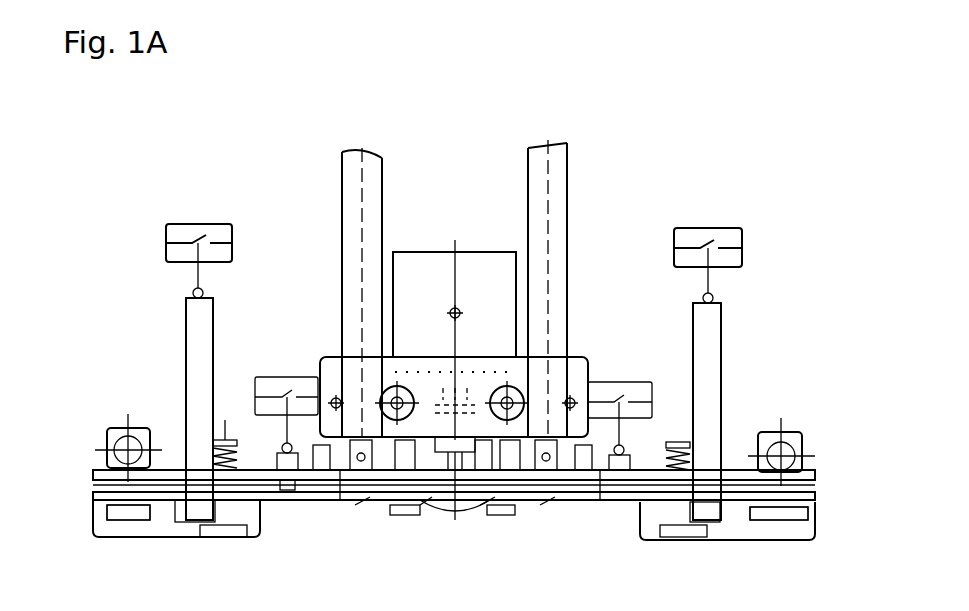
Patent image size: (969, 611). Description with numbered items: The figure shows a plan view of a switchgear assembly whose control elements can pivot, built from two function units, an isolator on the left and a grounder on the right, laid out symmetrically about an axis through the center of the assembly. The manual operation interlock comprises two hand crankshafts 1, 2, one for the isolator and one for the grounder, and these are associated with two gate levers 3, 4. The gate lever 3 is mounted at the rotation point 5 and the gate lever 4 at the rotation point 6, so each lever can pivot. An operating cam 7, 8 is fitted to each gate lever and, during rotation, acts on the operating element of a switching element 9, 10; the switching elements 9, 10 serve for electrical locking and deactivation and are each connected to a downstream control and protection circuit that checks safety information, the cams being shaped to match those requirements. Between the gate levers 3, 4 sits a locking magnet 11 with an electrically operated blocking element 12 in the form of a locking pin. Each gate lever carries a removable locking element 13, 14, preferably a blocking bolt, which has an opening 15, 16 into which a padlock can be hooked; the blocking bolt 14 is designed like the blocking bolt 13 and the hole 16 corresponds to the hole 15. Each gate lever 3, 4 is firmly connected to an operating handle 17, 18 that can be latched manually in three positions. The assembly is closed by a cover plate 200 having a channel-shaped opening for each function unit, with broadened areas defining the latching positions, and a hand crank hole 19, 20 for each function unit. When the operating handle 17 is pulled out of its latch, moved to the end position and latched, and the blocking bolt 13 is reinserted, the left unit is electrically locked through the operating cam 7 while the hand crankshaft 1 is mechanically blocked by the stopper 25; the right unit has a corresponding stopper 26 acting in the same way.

The hand crankshaft 1 is at (362, 196).
The hand crankshaft 2 is at (555, 207).
The gate lever 3 is at (105, 470).
The gate lever 4 is at (810, 470).
The rotation point 5 is at (409, 515).
The rotation point 6 is at (498, 517).
The operating cam 7 is at (198, 342).
The operating cam 8 is at (705, 337).
The switching element 9 is at (176, 222).
The switching element 10 is at (714, 228).
The locking magnet 11 is at (420, 275).
The blocking element 12 is at (463, 490).
The locking element 13 is at (115, 508).
The locking element 14 is at (803, 513).
The opening 15 is at (115, 508).
The opening 16 is at (803, 513).
The operating handle 17 is at (208, 538).
The operating handle 18 is at (687, 540).
The hand crank hole 19 is at (354, 490).
The hand crank hole 20 is at (547, 512).
The stopper 25 is at (325, 497).
The stopper 26 is at (592, 503).
The cover plate 200 is at (287, 498).